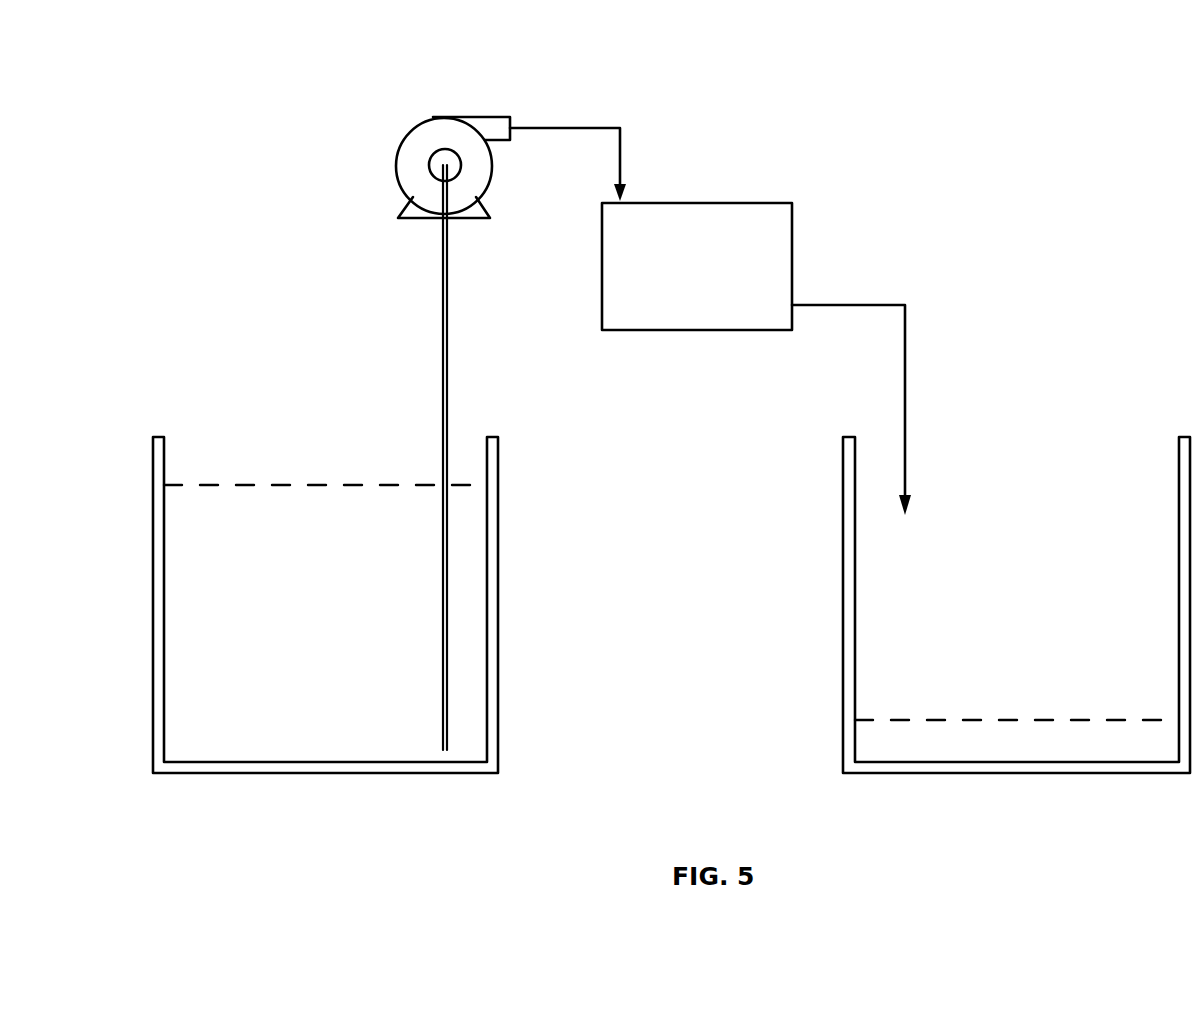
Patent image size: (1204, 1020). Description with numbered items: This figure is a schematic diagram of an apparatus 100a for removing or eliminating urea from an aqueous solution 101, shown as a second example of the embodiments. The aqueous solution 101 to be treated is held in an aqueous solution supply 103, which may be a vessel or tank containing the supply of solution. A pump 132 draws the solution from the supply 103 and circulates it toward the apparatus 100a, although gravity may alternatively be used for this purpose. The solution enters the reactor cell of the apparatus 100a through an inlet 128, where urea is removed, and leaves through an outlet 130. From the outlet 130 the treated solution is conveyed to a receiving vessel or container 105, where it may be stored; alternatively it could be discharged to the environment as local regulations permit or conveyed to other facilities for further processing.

The pump 132 is at (426, 126).
The inlet 128 is at (620, 160).
The apparatus 100a is at (745, 182).
The outlet 130 is at (812, 304).
The aqueous solution 101 is at (290, 485).
The aqueous solution supply 103 is at (498, 533).
The receiving vessel 105 is at (843, 630).